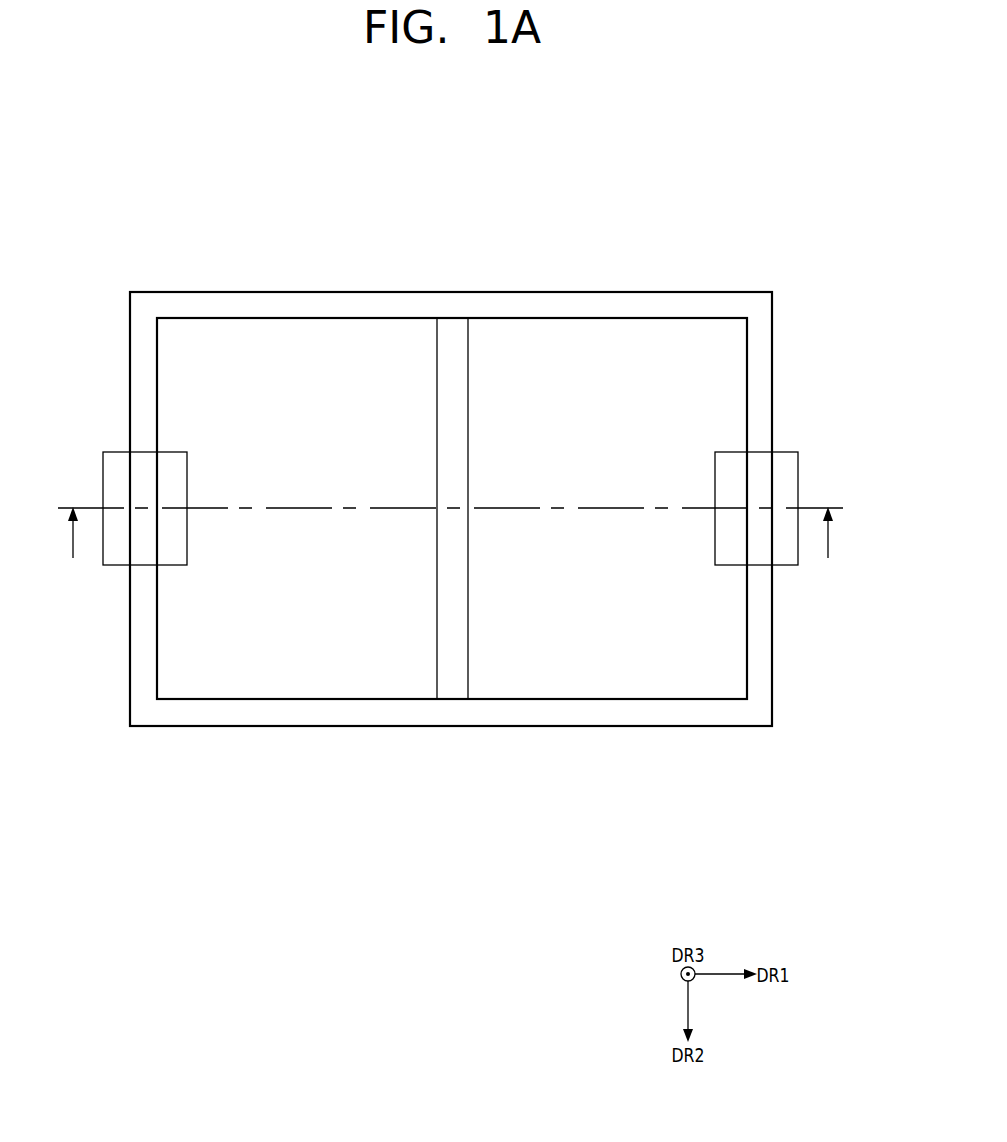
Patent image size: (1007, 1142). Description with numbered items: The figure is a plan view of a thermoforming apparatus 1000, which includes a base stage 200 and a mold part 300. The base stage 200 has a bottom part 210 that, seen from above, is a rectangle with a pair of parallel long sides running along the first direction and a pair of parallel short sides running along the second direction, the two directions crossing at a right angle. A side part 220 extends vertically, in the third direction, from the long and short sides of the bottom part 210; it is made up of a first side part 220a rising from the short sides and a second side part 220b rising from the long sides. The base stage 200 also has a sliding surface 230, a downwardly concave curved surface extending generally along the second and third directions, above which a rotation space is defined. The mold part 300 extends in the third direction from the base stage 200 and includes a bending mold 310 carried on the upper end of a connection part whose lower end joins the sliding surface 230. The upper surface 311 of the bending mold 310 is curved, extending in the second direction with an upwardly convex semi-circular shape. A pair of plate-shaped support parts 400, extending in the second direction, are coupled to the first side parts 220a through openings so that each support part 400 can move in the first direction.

The thermoforming apparatus 1000 is at (451, 517).
The base stage 200 is at (474, 566).
The bottom part 210 is at (452, 581).
The side part 220 is at (474, 545).
The first side part 220a is at (760, 658).
The second side part 220b is at (668, 302).
The sliding surface 230 is at (502, 672).
The mold part 300 is at (449, 525).
The bending mold 310 is at (437, 334).
The upper surface 311 is at (442, 373).
The support part 400 is at (117, 470).